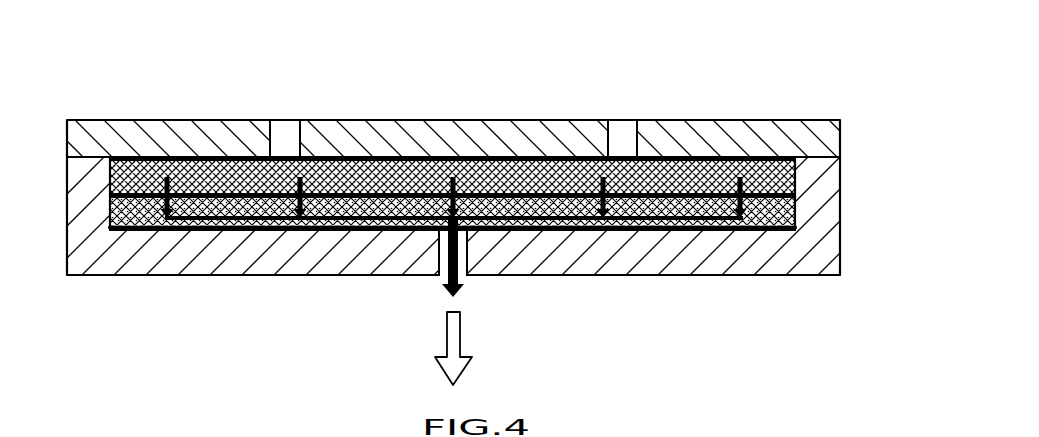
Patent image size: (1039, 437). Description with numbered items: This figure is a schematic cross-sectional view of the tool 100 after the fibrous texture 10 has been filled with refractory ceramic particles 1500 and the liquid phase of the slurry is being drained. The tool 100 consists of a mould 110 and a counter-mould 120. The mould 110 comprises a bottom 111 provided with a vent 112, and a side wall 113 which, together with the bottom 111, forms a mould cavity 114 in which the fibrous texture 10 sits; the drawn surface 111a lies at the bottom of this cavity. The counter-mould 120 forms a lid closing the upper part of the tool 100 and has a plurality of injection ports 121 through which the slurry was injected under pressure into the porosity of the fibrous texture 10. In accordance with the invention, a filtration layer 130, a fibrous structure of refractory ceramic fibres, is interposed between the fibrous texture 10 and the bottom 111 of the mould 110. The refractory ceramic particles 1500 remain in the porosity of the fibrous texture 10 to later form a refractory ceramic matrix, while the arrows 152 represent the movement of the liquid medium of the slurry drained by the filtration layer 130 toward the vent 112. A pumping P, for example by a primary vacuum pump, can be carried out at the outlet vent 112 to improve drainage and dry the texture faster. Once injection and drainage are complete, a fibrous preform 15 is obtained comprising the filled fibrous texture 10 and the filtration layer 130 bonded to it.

The tool 100 is at (112, 80).
The mould 110 is at (67, 181).
The bottom 111 is at (228, 266).
The cavity floor surface 111a is at (665, 232).
The vent 112 is at (462, 276).
The side wall 113 is at (85, 236).
The mould cavity 114 is at (440, 160).
The counter-mould 120 is at (196, 120).
The injection ports 121 is at (280, 128).
The fibrous texture 10 is at (795, 178).
The filtration layer 130 is at (795, 213).
The fibrous preform 15 is at (519, 198).
The arrows 152 is at (763, 162).
The refractory ceramic particles 1500 is at (382, 158).
The pumping P is at (447, 340).